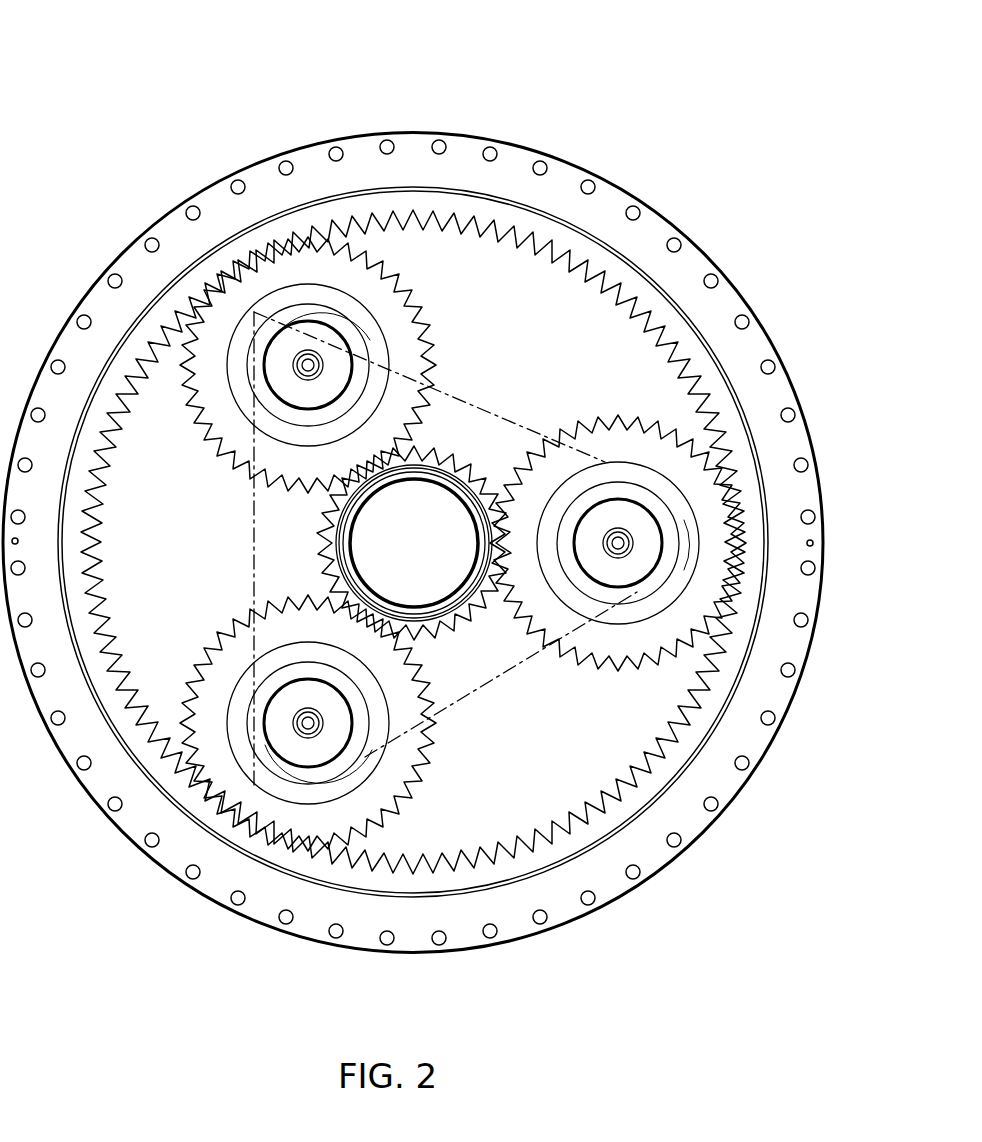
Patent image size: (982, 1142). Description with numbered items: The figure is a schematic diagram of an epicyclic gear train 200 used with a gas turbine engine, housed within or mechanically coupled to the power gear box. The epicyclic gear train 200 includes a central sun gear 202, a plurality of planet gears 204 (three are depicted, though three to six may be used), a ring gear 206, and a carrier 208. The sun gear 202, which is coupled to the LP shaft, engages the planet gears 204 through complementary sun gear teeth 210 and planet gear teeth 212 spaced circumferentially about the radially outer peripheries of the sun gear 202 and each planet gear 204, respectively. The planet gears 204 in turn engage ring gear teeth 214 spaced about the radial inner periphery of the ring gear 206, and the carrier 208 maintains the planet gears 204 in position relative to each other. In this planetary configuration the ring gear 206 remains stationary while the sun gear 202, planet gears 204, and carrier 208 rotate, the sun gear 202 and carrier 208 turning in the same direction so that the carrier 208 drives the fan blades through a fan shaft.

The epicyclic gear train 200 is at (597, 63).
The sun gear 202 is at (455, 583).
The planet gears 204 is at (280, 333).
The ring gear 206 is at (701, 246).
The carrier 208 is at (498, 668).
The sun gear teeth 210 is at (322, 527).
The planet gear teeth 212 is at (446, 347).
The ring gear teeth 214 is at (652, 311).